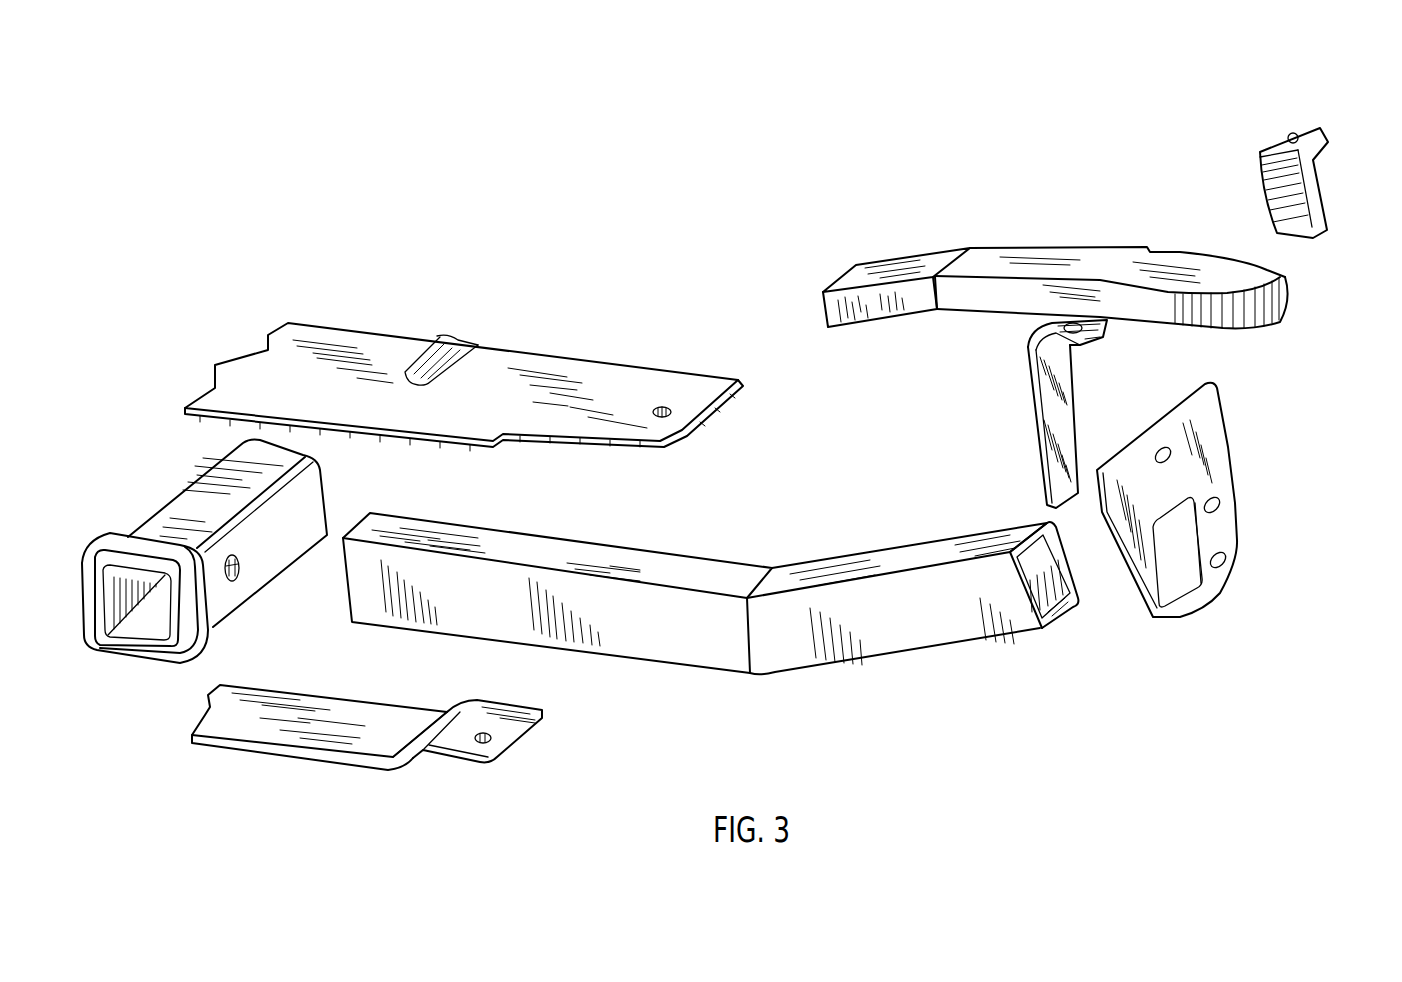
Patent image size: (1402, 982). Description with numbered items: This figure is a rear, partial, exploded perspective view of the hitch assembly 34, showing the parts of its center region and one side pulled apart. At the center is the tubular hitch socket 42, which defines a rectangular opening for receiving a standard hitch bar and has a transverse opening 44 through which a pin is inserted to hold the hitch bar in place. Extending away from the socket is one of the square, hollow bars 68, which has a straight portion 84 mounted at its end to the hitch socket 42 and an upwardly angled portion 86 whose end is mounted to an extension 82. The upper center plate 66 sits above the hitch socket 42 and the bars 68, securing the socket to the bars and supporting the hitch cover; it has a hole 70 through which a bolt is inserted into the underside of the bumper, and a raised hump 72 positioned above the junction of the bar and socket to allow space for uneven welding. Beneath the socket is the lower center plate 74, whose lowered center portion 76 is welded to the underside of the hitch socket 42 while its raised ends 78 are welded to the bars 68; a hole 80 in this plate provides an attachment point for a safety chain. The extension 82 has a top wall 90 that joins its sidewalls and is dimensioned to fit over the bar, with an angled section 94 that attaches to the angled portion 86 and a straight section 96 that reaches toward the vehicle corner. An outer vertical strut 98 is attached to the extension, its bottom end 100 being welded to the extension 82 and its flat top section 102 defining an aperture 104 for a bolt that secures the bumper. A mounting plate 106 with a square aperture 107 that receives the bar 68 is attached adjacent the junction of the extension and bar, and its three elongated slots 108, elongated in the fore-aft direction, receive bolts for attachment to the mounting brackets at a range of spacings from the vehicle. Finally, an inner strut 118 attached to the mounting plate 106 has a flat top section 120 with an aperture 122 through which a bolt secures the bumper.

The hitch assembly 34 is at (526, 190).
The tubular hitch socket 42 is at (204, 547).
The transverse opening 44 is at (240, 575).
The upper center plate 66 is at (464, 367).
The bars 68 is at (710, 591).
The holes 70 is at (663, 408).
The raised humps 72 is at (447, 348).
The lower center plate 74 is at (399, 747).
The lowered center portion 76 is at (360, 717).
The raised ends 78 is at (500, 710).
The holes 80 is at (490, 736).
The extension 82 is at (1038, 244).
The straight portion 84 is at (512, 555).
The upwardly angled portion 86 is at (925, 627).
The top wall 90 is at (977, 260).
The angled section 94 is at (850, 278).
The straight section 96 is at (1120, 260).
The outer vertical strut 98 is at (1298, 163).
The bottom end 100 is at (1317, 213).
The flat top section 102 is at (1280, 142).
The aperture 104 is at (1296, 135).
The mounting plate 106 is at (1205, 503).
The square aperture 107 is at (1173, 567).
The elongated slots 108 is at (1167, 447).
The inner strut 118 is at (1050, 406).
The flat top section 120 is at (1054, 346).
The aperture 122 is at (1065, 318).